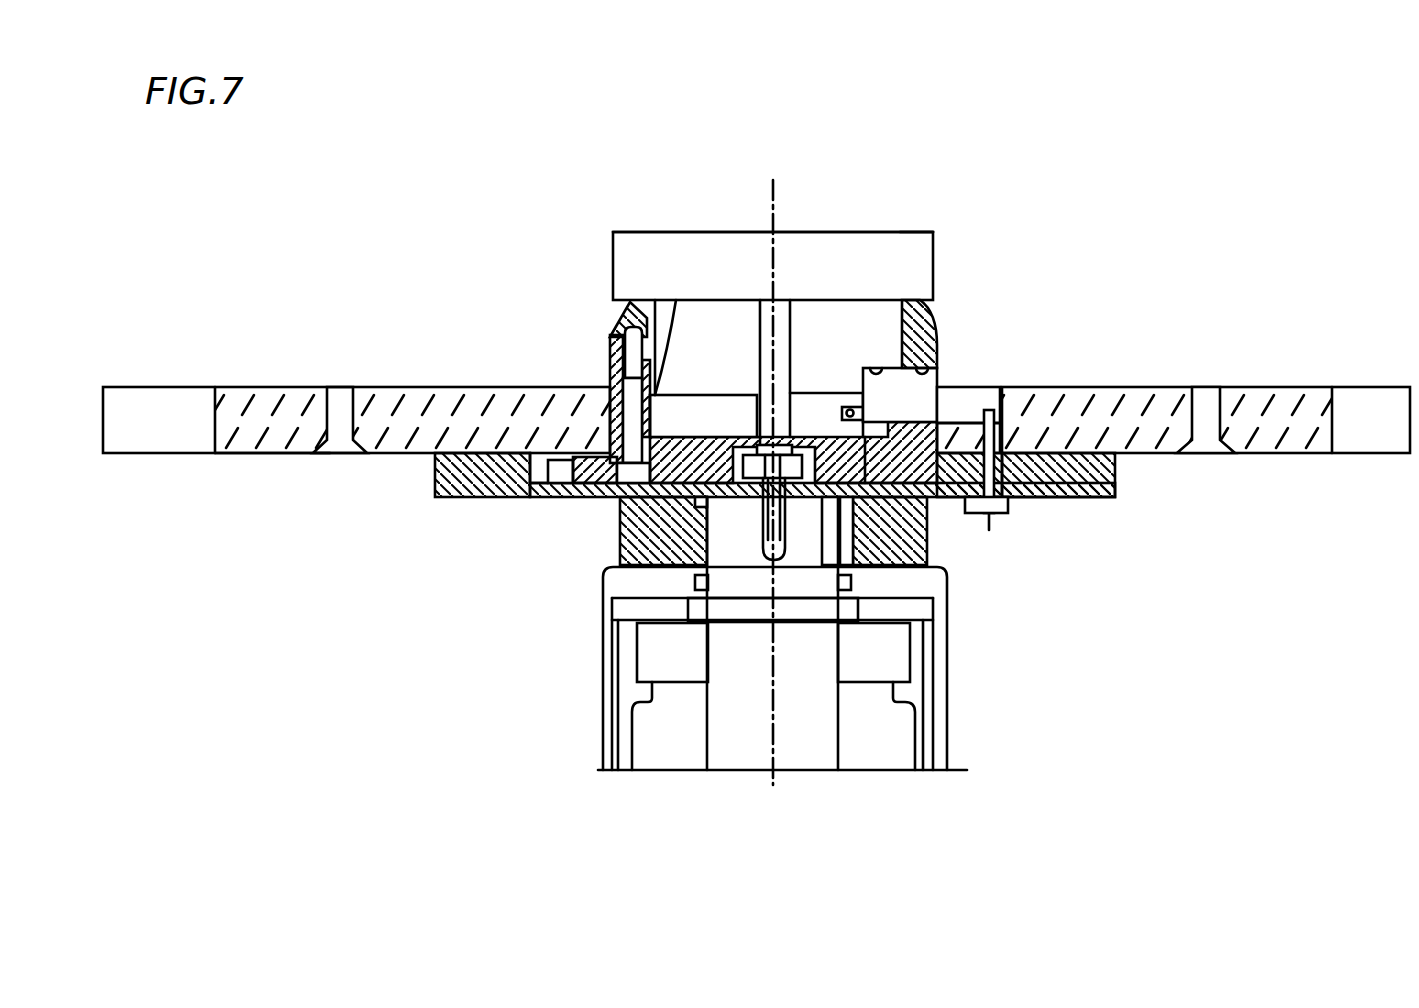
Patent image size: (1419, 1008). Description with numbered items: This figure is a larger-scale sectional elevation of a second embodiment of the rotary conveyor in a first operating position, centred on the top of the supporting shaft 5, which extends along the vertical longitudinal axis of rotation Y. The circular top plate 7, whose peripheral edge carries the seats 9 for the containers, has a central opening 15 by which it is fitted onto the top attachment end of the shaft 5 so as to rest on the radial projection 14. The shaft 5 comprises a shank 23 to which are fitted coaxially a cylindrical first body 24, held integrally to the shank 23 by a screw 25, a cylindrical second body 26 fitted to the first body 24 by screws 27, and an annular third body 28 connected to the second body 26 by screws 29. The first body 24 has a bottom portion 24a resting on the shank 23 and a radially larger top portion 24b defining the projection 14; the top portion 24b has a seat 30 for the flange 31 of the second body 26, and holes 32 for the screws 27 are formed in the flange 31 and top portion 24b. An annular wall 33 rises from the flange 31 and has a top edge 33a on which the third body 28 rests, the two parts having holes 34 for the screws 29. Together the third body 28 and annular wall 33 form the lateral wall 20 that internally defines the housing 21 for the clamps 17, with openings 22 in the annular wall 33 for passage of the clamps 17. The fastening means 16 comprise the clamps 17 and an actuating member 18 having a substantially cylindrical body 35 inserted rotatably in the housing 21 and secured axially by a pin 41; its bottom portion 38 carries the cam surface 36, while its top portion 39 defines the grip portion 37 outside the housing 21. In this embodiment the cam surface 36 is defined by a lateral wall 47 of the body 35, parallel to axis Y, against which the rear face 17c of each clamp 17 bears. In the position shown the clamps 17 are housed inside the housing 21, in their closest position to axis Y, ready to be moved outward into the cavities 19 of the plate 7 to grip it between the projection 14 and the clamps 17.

The supporting shaft 5 is at (948, 712).
The circular top plate 7 is at (248, 458).
The seats 9 is at (168, 408).
The radial projection 14 is at (1100, 497).
The central opening 15 is at (613, 378).
The fastening means 16 is at (965, 370).
The clamp 17 is at (940, 375).
The rear face 17c is at (858, 403).
The actuating member 18 is at (658, 222).
The cavities 19 is at (992, 403).
The lateral wall 20 is at (617, 317).
The housing 21 is at (703, 416).
The openings 22 is at (935, 360).
The shank 23 is at (603, 715).
The cylindrical first body 24 is at (620, 512).
The bottom portion 24a is at (620, 543).
The top portion 24b is at (437, 498).
The screw 25 is at (762, 547).
The cylindrical second body 26 is at (947, 497).
The screws 27 is at (1060, 440).
The annular third body 28 is at (615, 345).
The screws 29 is at (613, 443).
The seat 30 is at (533, 492).
The flange 31 is at (540, 470).
The holes 32 is at (1000, 512).
The annular wall 33 is at (662, 393).
The top edge 33a is at (654, 330).
The holes 34 is at (613, 427).
The substantially cylindrical body 35 is at (918, 222).
The cam surface 36 is at (887, 366).
The grip portion 37 is at (853, 255).
The bottom portion 38 is at (700, 347).
The top portion 39 is at (693, 255).
The pin 41 is at (800, 395).
The lateral wall 47 is at (868, 376).
The axis of rotation Y is at (773, 750).